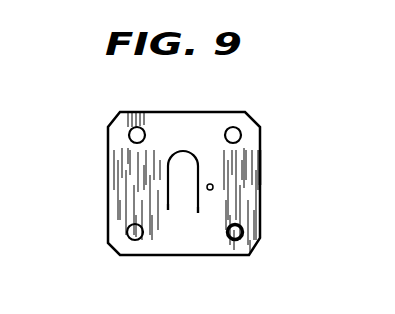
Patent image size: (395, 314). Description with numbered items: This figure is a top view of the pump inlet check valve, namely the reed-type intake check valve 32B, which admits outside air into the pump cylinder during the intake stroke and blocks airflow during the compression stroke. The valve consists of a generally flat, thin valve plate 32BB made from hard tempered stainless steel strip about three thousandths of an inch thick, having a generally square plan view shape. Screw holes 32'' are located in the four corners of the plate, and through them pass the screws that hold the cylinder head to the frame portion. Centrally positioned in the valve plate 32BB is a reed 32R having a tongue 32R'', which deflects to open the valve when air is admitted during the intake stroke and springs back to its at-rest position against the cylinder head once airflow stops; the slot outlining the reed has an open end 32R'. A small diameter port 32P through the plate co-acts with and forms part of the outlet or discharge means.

The reed-type intake check valve 32B is at (265, 131).
The valve plate 32BB is at (258, 168).
The screw holes 32'' is at (192, 185).
The reed 32R is at (115, 182).
The tongue 32R'' is at (187, 145).
The slot lower open end 32R' is at (202, 248).
The small diameter port 32P is at (213, 188).